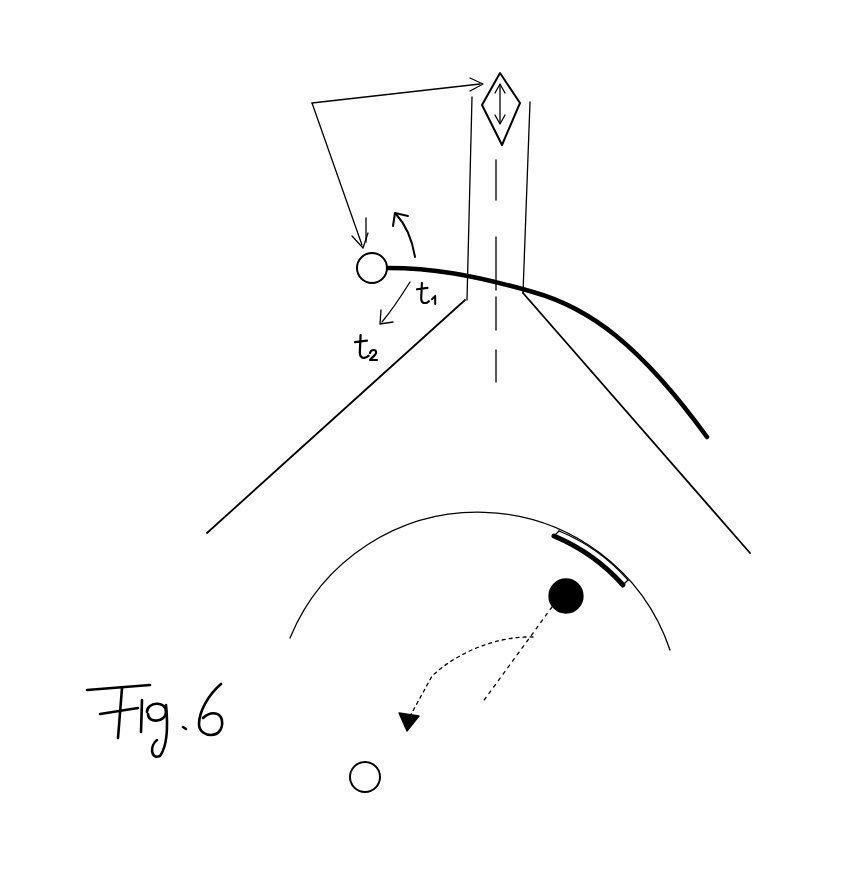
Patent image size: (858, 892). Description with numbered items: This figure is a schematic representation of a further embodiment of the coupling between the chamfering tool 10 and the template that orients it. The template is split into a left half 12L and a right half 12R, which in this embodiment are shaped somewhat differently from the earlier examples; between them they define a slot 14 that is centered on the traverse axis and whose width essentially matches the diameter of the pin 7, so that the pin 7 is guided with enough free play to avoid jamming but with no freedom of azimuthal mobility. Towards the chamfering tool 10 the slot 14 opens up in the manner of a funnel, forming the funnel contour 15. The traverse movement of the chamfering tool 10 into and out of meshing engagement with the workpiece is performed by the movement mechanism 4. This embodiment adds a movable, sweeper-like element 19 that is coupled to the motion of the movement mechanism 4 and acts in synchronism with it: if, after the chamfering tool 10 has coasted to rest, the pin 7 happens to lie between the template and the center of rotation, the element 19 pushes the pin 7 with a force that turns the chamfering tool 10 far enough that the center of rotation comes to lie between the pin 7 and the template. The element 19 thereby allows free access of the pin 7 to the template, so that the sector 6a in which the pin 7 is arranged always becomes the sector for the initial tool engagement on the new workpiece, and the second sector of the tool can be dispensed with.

The movement mechanism 4 is at (578, 78).
The slot 14 is at (583, 202).
The movable element 19 is at (618, 305).
The left half of the template 12L is at (317, 278).
The right half of the template 12R is at (722, 307).
The funnel contour 15 is at (775, 452).
The chamfering tool 10 is at (332, 632).
The sector 6a is at (680, 573).
The pin 7 is at (597, 652).